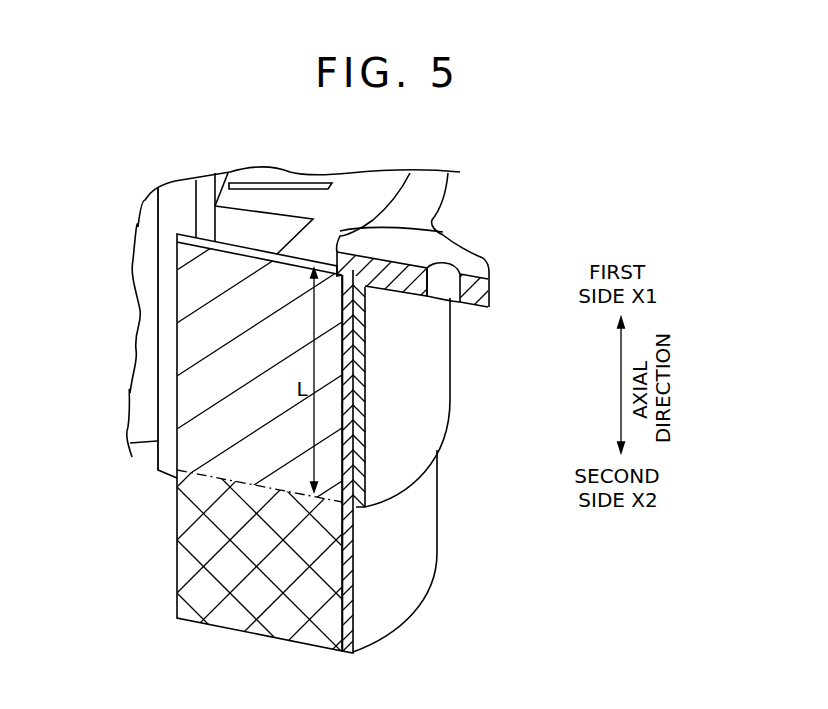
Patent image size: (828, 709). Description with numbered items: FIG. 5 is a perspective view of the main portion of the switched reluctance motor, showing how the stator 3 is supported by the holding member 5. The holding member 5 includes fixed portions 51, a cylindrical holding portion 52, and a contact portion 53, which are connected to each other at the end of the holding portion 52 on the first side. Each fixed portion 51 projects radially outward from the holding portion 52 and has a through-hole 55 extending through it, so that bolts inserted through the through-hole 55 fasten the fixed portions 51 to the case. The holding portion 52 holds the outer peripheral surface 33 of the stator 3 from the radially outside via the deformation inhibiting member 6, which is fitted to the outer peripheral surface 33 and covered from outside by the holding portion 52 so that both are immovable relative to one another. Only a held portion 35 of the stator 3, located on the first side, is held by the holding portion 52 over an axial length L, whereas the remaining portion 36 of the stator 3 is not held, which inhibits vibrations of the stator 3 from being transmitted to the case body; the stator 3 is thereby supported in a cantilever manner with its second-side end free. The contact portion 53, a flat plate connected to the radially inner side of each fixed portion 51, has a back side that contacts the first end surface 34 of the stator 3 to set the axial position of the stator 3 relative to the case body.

The stator 3 is at (357, 184).
The first end surface 34 is at (322, 250).
The held portion 35 is at (198, 444).
The portion (of the stator not held) 36 is at (186, 566).
The holding member 5 is at (456, 183).
The fixed portion 51 is at (489, 257).
The holding portion 52 is at (372, 413).
The contact portion 53 is at (442, 230).
The through-hole 55 is at (438, 291).
The outer peripheral surface 33 is at (344, 455).
The deformation inhibiting member 6 is at (353, 527).